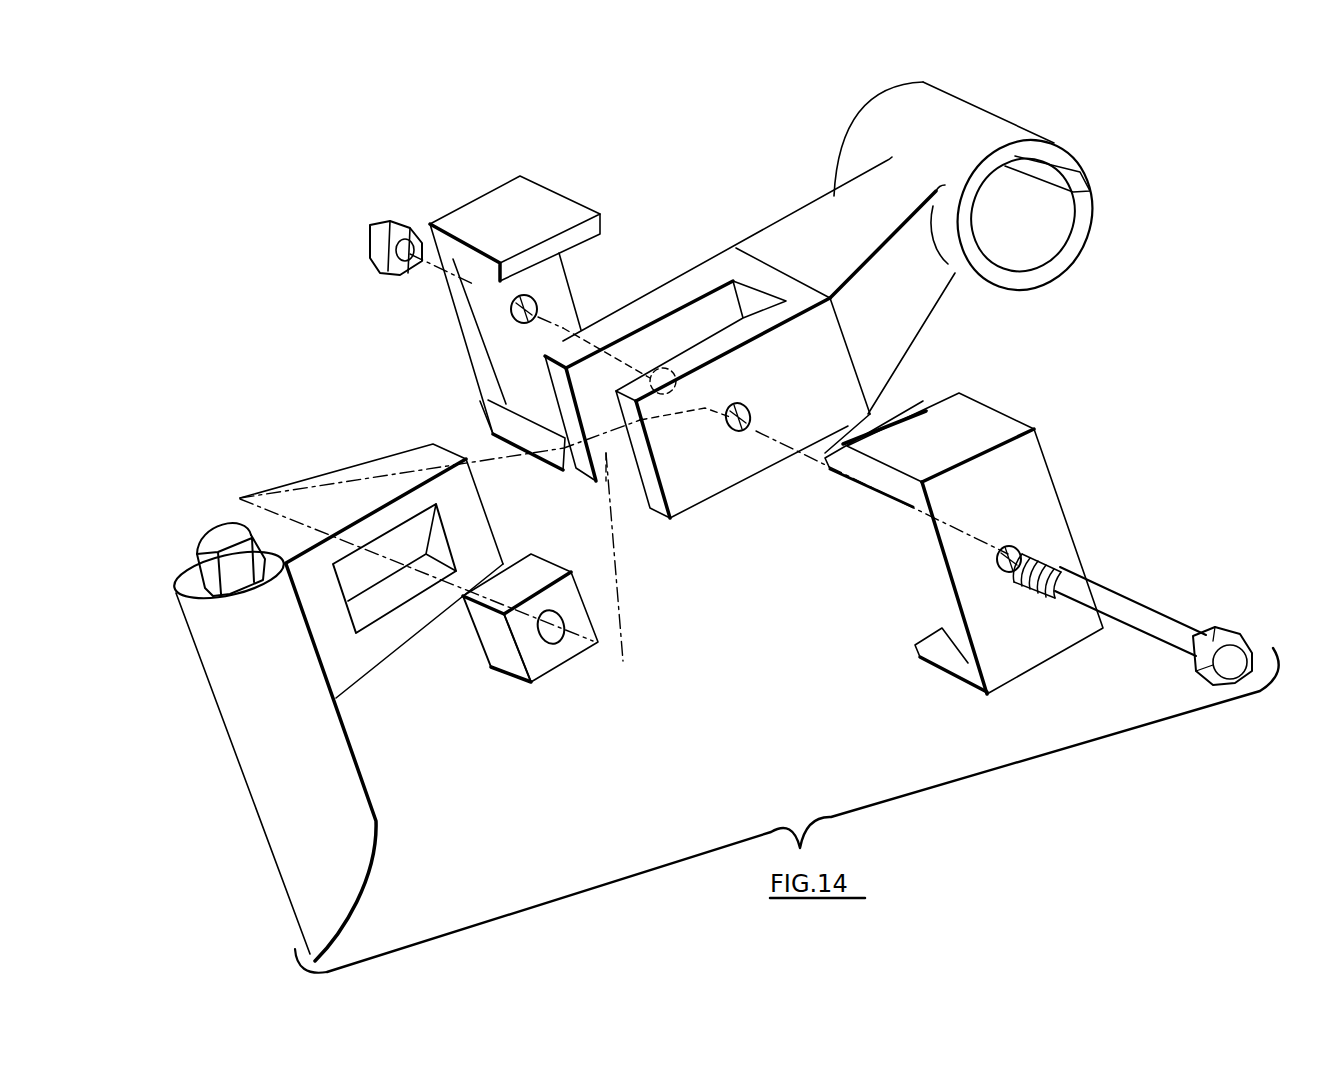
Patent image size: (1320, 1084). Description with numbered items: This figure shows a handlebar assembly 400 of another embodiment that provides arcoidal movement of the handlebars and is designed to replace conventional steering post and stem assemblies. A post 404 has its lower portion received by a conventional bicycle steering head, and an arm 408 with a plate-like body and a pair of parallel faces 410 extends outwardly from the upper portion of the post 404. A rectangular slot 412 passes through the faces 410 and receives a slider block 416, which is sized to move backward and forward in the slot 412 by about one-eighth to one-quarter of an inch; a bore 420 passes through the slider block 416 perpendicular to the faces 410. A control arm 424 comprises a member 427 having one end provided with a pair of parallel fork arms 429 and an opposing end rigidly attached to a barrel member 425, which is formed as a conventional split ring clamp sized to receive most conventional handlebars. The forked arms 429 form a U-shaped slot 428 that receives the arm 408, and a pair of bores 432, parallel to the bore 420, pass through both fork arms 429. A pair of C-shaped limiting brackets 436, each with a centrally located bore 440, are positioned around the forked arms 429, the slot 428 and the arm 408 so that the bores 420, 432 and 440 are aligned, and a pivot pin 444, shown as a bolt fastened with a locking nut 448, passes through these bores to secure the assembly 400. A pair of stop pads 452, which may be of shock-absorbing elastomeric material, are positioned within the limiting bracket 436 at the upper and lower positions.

The handlebar assembly 400 is at (642, 160).
The post 404 is at (347, 777).
The arm 408 is at (391, 482).
The faces 410 is at (347, 667).
The rectangular slot 412 is at (373, 610).
The slider block 416 is at (540, 663).
The bore 420 is at (549, 616).
The control arm 424 is at (1010, 127).
The barrel member 425 is at (1045, 272).
The member 427 is at (910, 316).
The U-shaped slot 428 is at (714, 300).
The fork arms 429 is at (686, 286).
The bores 432 is at (733, 424).
The limiting brackets 436 is at (545, 205).
The bore 440 is at (535, 305).
The pivot pin 444 is at (1112, 602).
The locking nut 448 is at (398, 222).
The stop pads 452 is at (558, 437).